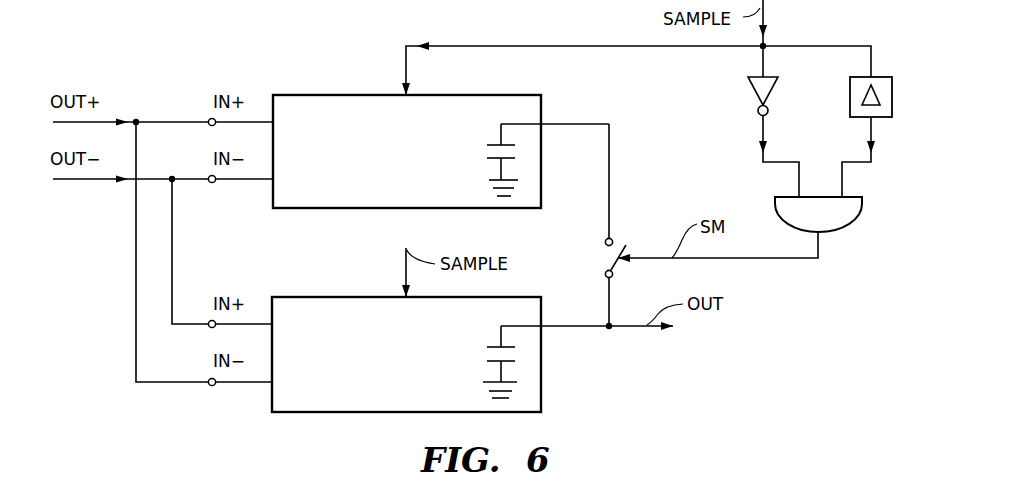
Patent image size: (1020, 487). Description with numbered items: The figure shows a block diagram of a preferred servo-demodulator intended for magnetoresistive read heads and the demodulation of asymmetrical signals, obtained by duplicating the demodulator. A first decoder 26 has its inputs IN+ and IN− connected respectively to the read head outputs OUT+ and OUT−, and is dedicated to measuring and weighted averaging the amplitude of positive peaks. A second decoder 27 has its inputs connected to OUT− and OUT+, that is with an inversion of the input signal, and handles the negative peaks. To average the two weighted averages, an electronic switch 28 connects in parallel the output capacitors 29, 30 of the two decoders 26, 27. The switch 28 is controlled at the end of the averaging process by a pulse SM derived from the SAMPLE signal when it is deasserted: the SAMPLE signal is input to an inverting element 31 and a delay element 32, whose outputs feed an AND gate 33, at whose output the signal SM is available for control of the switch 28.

The first decoder 26 is at (362, 95).
The second decoder 27 is at (362, 297).
The electronic switch 28 is at (614, 267).
The output capacitor 29 is at (495, 143).
The output capacitor 30 is at (493, 345).
The inverting element 31 is at (753, 92).
The delay element 32 is at (884, 76).
The AND gate 33 is at (840, 230).